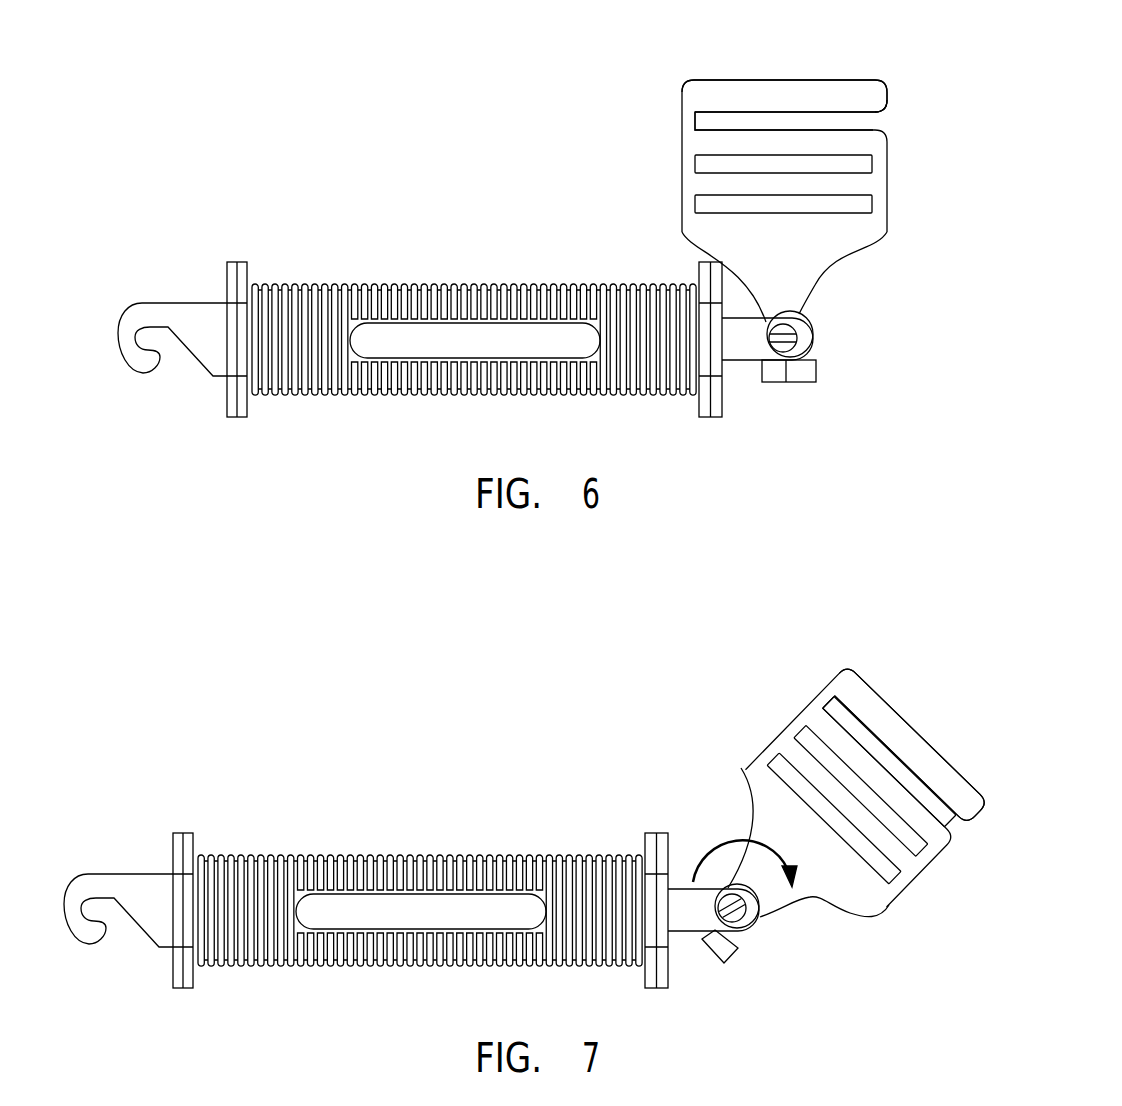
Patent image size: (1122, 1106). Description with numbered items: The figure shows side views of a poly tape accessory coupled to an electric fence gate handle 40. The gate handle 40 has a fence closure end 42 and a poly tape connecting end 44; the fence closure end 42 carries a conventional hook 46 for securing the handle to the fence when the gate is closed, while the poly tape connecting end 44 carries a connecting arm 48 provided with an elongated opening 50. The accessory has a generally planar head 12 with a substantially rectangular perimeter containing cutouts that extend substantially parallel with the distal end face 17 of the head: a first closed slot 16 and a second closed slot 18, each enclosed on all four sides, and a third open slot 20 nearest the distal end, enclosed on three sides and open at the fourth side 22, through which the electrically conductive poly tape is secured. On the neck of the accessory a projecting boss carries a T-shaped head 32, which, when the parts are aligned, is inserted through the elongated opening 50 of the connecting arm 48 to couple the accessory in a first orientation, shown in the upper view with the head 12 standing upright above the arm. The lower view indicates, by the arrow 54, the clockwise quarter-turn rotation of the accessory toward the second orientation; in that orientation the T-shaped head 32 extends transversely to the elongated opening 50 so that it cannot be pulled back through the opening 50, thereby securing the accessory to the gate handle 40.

In FIG. 6, the head 12 is at (682, 127).
In FIG. 7, the head 12 is at (826, 694).
In FIG. 6, the first closed slot 16 is at (700, 205).
In FIG. 6, the distal end face 17 is at (768, 80).
In FIG. 7, the distal end face 17 is at (907, 706).
In FIG. 6, the second closed slot 18 is at (700, 164).
In FIG. 6, the third open slot 20 is at (699, 123).
In FIG. 6, the slot opening 22 is at (870, 120).
In FIG. 6, the T-shaped head 32 is at (786, 336).
In FIG. 6, the electric fence gate handle 40 is at (446, 276).
In FIG. 7, the electric fence gate handle 40 is at (439, 846).
In FIG. 6, the fence closure end 42 is at (238, 262).
In FIG. 6, the poly tape connecting end 44 is at (700, 272).
In FIG. 6, the hook 46 is at (156, 303).
In FIG. 6, the connecting arm 48 is at (744, 362).
In FIG. 6, the elongated opening 50 is at (790, 348).
In FIG. 7, the arrow 54 is at (722, 842).